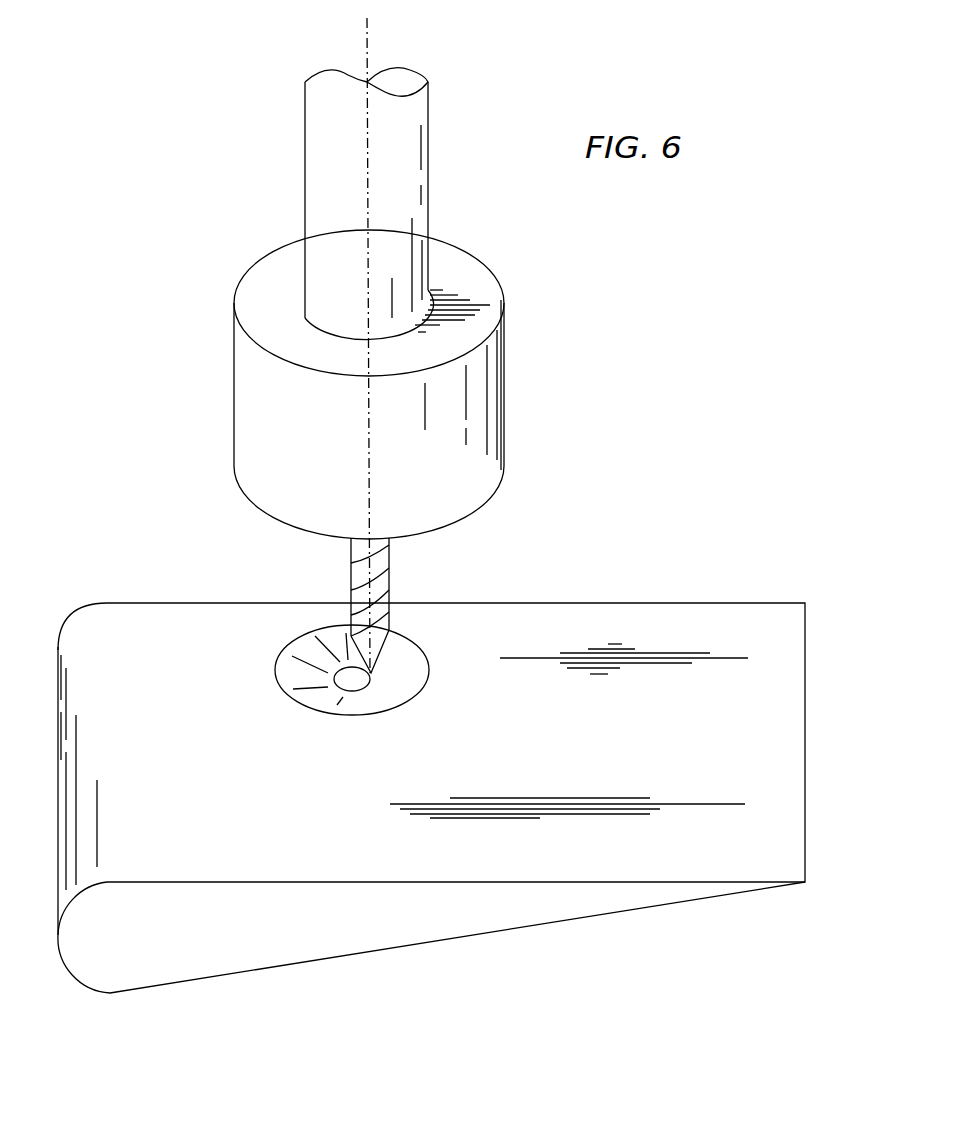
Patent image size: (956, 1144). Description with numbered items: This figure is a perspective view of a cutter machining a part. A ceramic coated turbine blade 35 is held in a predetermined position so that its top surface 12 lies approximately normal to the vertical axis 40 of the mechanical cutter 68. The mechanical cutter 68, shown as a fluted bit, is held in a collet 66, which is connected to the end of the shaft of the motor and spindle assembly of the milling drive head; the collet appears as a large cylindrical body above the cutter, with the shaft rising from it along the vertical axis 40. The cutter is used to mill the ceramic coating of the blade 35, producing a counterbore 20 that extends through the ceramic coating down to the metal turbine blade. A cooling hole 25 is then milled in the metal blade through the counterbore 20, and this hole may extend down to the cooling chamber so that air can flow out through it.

The top surface 12 is at (459, 776).
The counterbore 20 is at (407, 698).
The cooling hole 25 is at (330, 680).
The ceramic coated turbine blade 35 is at (805, 624).
The vertical axis 40 is at (367, 53).
The collet 66 is at (504, 366).
The mechanical cutter 68 is at (389, 582).